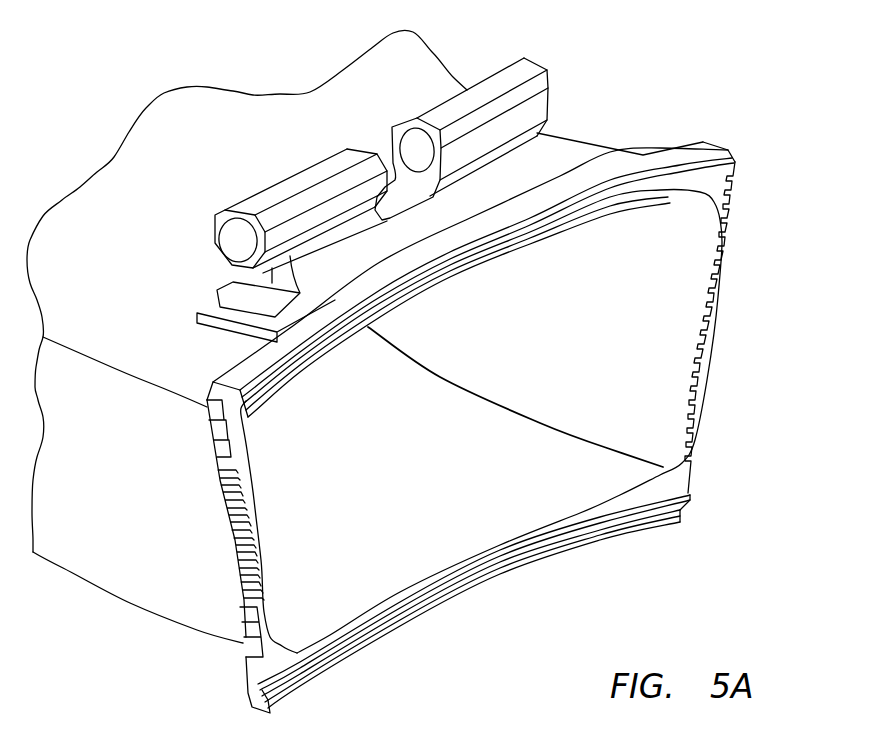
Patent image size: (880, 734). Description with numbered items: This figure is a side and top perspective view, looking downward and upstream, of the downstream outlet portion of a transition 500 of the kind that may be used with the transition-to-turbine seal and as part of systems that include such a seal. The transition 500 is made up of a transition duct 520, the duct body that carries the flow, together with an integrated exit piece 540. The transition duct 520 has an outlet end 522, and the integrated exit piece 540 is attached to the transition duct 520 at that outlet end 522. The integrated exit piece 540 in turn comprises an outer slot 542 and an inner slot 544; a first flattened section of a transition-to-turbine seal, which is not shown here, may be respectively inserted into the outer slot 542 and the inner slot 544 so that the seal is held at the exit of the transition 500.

The transition 500 is at (501, 396).
The transition duct 520 is at (143, 505).
The outlet end 522 is at (400, 593).
The integrated exit piece 540 is at (567, 139).
The outer slot 542 is at (733, 157).
The inner slot 544 is at (657, 513).